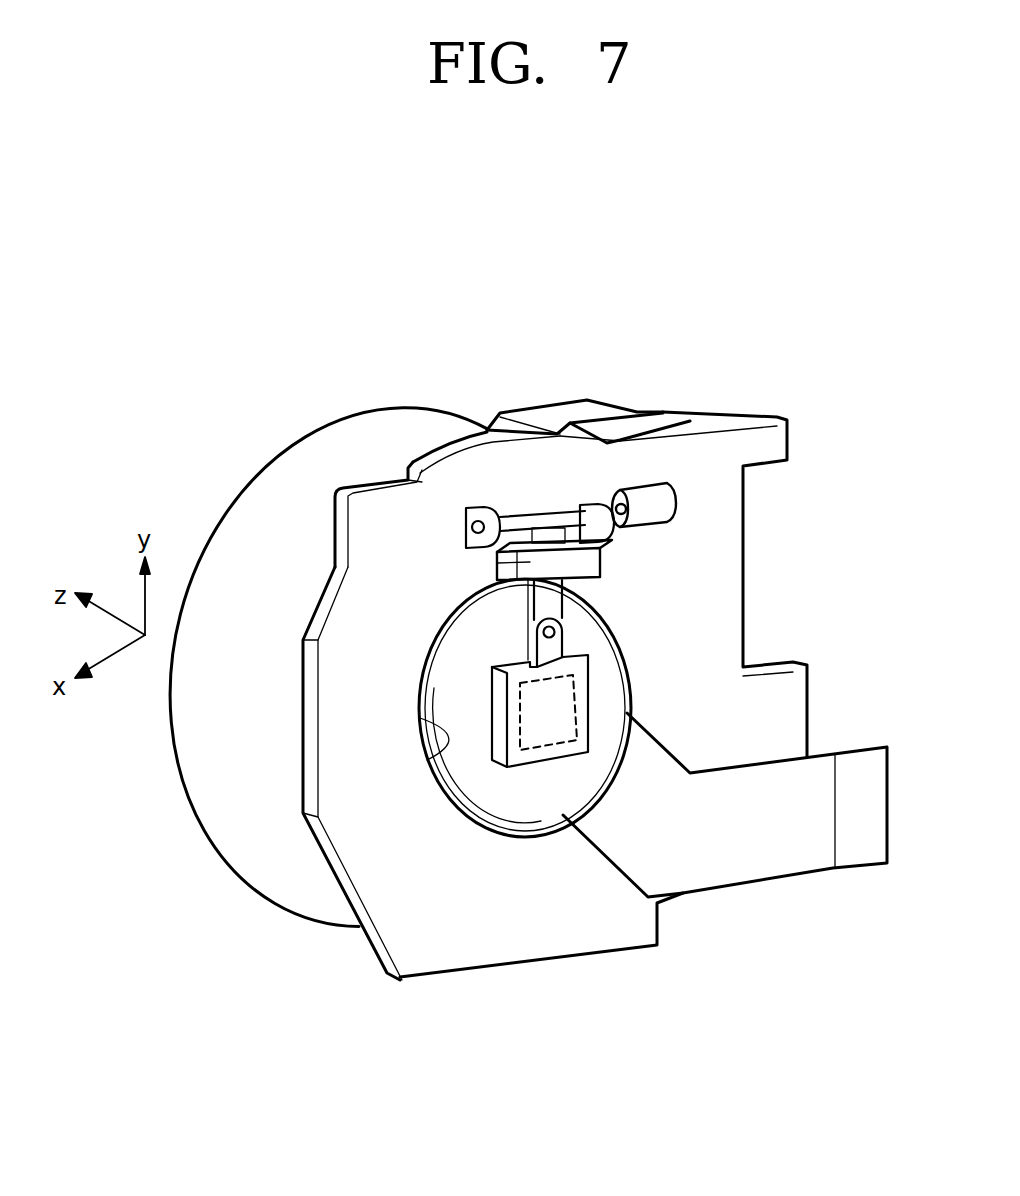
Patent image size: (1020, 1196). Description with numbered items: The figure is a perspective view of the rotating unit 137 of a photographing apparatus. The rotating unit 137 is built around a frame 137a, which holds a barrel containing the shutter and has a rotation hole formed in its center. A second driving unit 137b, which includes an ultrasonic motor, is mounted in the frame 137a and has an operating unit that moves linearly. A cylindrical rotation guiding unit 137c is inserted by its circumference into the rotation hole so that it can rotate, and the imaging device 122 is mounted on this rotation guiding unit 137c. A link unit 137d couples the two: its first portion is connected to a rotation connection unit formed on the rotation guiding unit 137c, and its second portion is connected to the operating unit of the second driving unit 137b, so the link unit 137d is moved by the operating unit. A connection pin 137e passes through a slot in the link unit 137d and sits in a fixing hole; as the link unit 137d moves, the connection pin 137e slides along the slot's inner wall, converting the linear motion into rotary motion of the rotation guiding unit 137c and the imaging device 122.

The rotating unit 137 is at (643, 632).
The frame 137a is at (314, 736).
The second driving unit 137b is at (639, 422).
The rotation guiding unit 137c is at (657, 687).
The link unit 137d is at (417, 463).
The connection pin 137e is at (717, 548).
The imaging device 122 is at (698, 668).